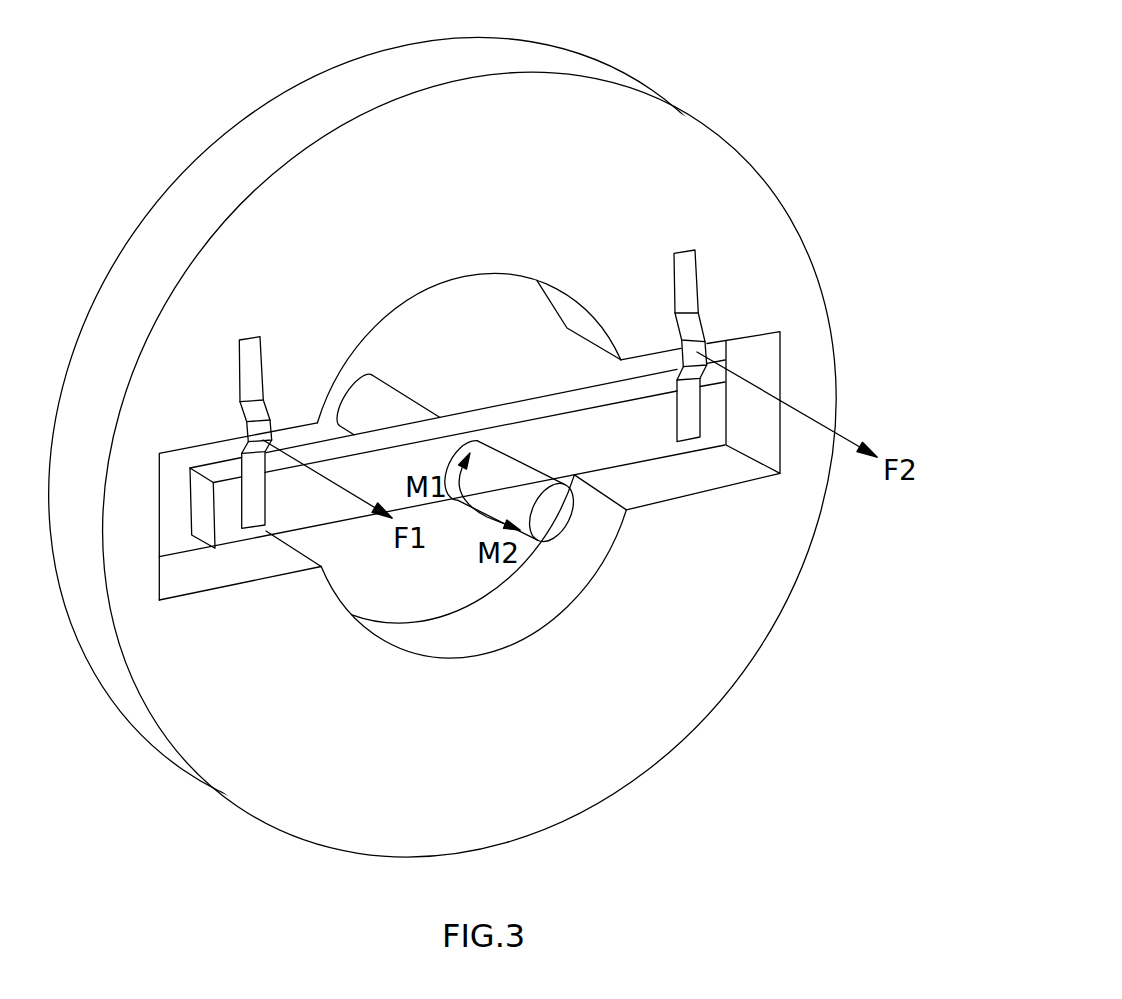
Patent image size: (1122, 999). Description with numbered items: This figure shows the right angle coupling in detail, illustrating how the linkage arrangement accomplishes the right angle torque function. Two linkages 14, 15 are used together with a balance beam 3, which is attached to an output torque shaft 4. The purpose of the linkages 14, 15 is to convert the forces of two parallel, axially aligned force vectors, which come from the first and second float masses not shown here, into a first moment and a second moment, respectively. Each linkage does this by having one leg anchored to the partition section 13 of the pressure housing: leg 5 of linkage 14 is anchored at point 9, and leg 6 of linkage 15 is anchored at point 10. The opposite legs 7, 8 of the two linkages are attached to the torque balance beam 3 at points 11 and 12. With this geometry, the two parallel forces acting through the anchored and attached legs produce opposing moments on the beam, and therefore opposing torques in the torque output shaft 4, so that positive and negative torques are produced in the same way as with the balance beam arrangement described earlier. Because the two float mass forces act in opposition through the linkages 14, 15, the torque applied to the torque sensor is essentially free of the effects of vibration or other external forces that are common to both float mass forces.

The balance beam 3 is at (570, 408).
The output torque shaft 4 is at (412, 397).
The leg of first linkage 5 is at (262, 412).
The leg of second linkage 6 is at (695, 328).
The opposite leg of first linkage 7 is at (261, 456).
The opposite leg of second linkage 8 is at (697, 372).
The anchor point 9 is at (250, 338).
The anchor point 10 is at (685, 280).
The attachment point 11 is at (255, 525).
The attachment point 12 is at (692, 430).
The partition section 13 is at (693, 113).
The linkage 14 is at (245, 449).
The linkage 15 is at (661, 418).